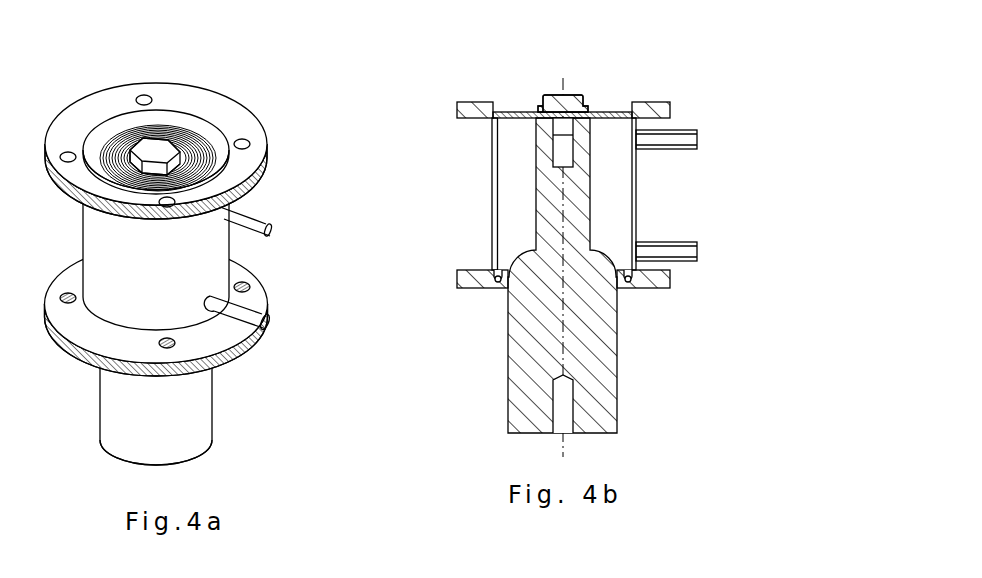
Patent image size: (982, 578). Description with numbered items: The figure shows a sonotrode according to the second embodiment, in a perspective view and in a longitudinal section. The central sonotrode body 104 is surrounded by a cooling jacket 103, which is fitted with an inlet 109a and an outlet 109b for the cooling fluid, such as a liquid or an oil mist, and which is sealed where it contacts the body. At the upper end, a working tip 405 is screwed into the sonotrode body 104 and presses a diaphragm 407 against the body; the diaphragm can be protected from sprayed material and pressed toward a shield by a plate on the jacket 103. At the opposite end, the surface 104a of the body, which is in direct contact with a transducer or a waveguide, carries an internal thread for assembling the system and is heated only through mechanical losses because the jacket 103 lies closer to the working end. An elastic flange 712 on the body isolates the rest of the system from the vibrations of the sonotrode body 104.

In FIG. 4A, the cooling jacket 103 is at (193, 298).
In FIG. 4B, the cooling jacket 103 is at (564, 194).
In FIG. 4A, the sonotrode body 104 is at (192, 436).
In FIG. 4A, the surface in direct contact with a transducer or a waveguide 104a is at (182, 465).
In FIG. 4B, the surface in direct contact with a transducer or a waveguide 104a is at (612, 433).
In FIG. 4A, the working tip 405 is at (166, 148).
In FIG. 4B, the working tip 405 is at (588, 90).
In FIG. 4A, the diaphragm 407 is at (216, 160).
In FIG. 4B, the diaphragm 407 is at (615, 110).
In FIG. 4B, the inlet 109a is at (704, 140).
In FIG. 4B, the outlet 109b is at (704, 252).
In FIG. 4B, the elastic flange 712 is at (641, 287).